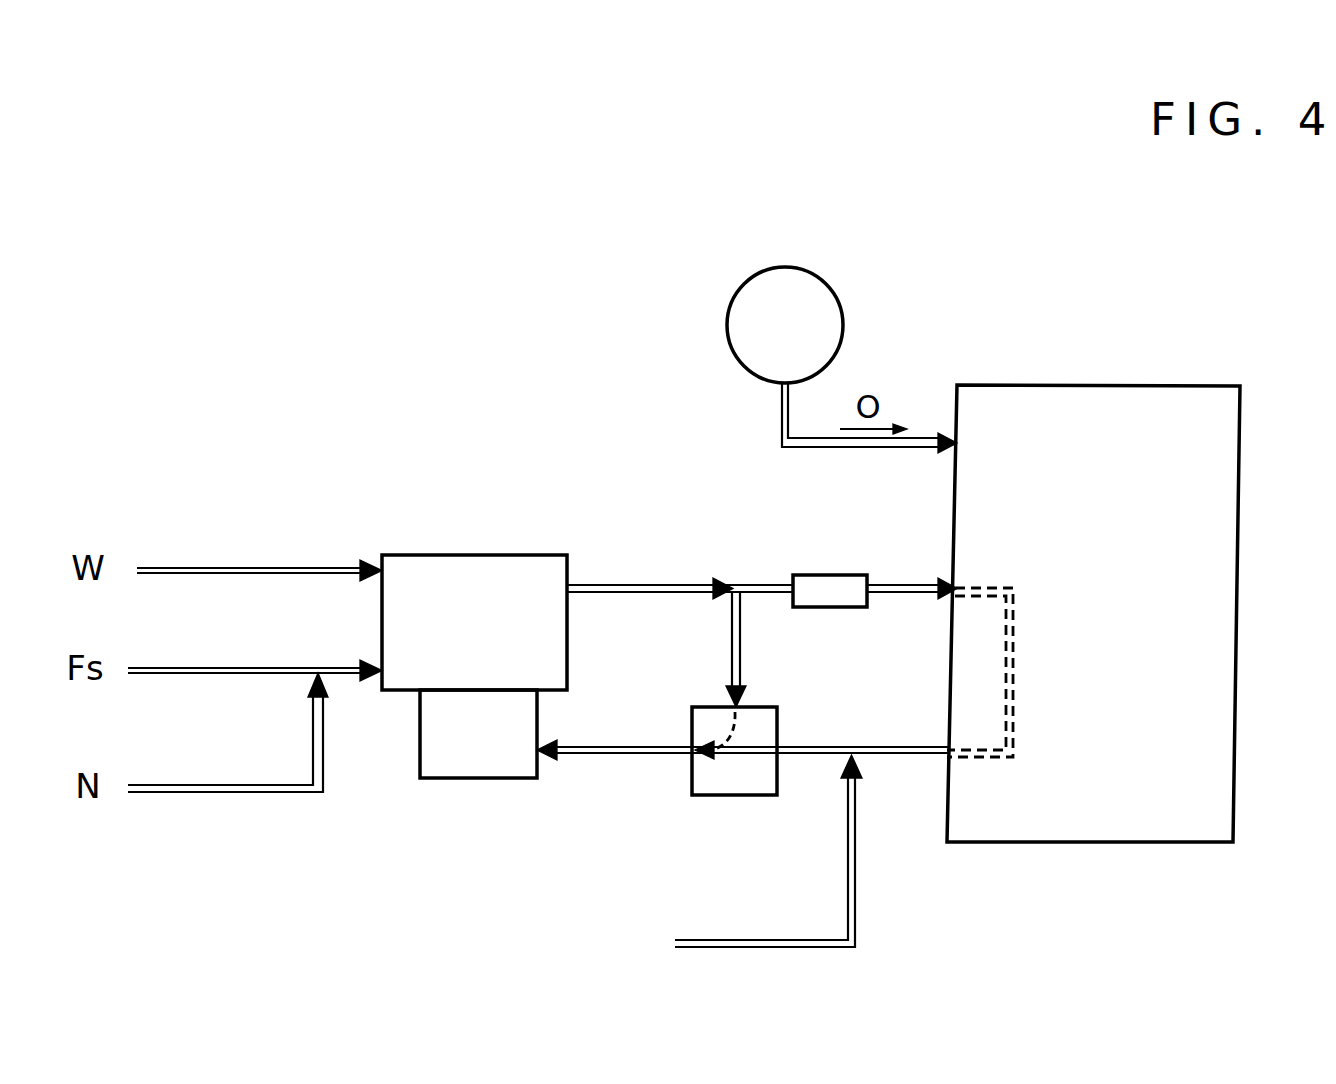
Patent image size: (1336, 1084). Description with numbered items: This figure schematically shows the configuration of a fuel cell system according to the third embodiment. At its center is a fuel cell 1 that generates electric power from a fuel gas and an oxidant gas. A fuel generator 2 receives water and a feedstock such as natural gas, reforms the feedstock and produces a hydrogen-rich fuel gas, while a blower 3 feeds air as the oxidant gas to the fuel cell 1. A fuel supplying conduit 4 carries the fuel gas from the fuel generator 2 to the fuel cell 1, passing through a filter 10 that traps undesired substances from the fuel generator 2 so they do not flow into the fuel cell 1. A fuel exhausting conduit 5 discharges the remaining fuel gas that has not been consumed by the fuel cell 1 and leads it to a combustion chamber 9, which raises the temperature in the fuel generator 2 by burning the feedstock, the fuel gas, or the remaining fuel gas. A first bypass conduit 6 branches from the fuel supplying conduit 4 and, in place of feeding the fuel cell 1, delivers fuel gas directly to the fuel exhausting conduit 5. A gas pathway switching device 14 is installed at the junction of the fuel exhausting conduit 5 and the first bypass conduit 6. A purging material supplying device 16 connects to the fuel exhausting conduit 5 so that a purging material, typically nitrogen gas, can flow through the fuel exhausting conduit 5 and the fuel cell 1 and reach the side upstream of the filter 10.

The fuel cell 1 is at (1143, 400).
The fuel generator 2 is at (474, 622).
The blower 3 is at (785, 325).
The fuel supplying conduit 4 is at (764, 584).
The fuel exhausting conduit 5 is at (808, 747).
The first bypass conduit 6 is at (741, 648).
The combustion chamber 9 is at (478, 734).
The filter 10 is at (838, 577).
The gas pathway switching device 14 is at (730, 796).
The purging material supplying device 16 is at (856, 910).